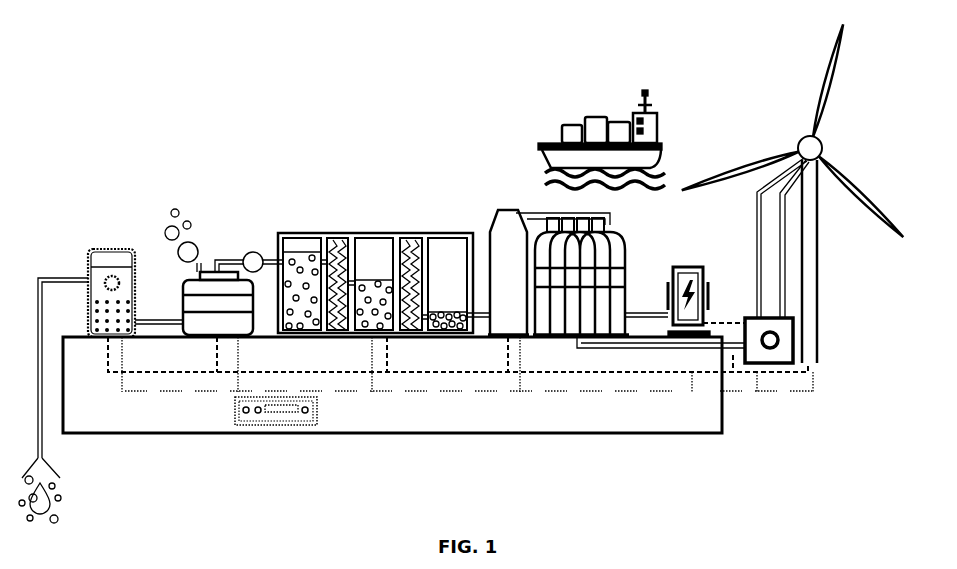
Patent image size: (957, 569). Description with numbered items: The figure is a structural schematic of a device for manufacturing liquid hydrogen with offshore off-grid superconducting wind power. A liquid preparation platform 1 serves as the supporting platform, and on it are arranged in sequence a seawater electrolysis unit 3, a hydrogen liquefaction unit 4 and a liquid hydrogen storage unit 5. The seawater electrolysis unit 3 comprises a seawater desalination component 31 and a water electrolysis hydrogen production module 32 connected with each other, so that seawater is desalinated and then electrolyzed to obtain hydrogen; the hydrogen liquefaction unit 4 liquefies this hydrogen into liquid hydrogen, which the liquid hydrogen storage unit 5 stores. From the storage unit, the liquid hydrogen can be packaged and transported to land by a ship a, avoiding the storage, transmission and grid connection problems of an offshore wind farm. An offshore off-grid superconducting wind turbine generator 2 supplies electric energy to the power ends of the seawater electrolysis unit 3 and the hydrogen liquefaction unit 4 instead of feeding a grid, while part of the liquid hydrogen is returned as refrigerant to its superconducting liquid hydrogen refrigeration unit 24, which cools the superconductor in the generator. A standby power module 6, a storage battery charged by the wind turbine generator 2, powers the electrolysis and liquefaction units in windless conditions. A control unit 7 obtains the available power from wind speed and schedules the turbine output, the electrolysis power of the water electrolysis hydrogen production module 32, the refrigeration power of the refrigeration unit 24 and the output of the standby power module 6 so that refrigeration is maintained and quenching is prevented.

The liquid preparation platform 1 is at (396, 414).
The offshore off-grid superconducting wind turbine generator 2 is at (800, 140).
The seawater electrolysis unit 3 is at (273, 141).
The seawater desalination component 31 is at (105, 250).
The water electrolysis hydrogen production module 32 is at (207, 270).
The hydrogen liquefaction unit 4 is at (375, 253).
The liquid hydrogen storage unit 5 is at (505, 208).
The standby power module 6 is at (697, 340).
The control unit 7 is at (276, 430).
The superconducting liquid hydrogen refrigeration unit 24 is at (772, 366).
The ship a is at (622, 112).